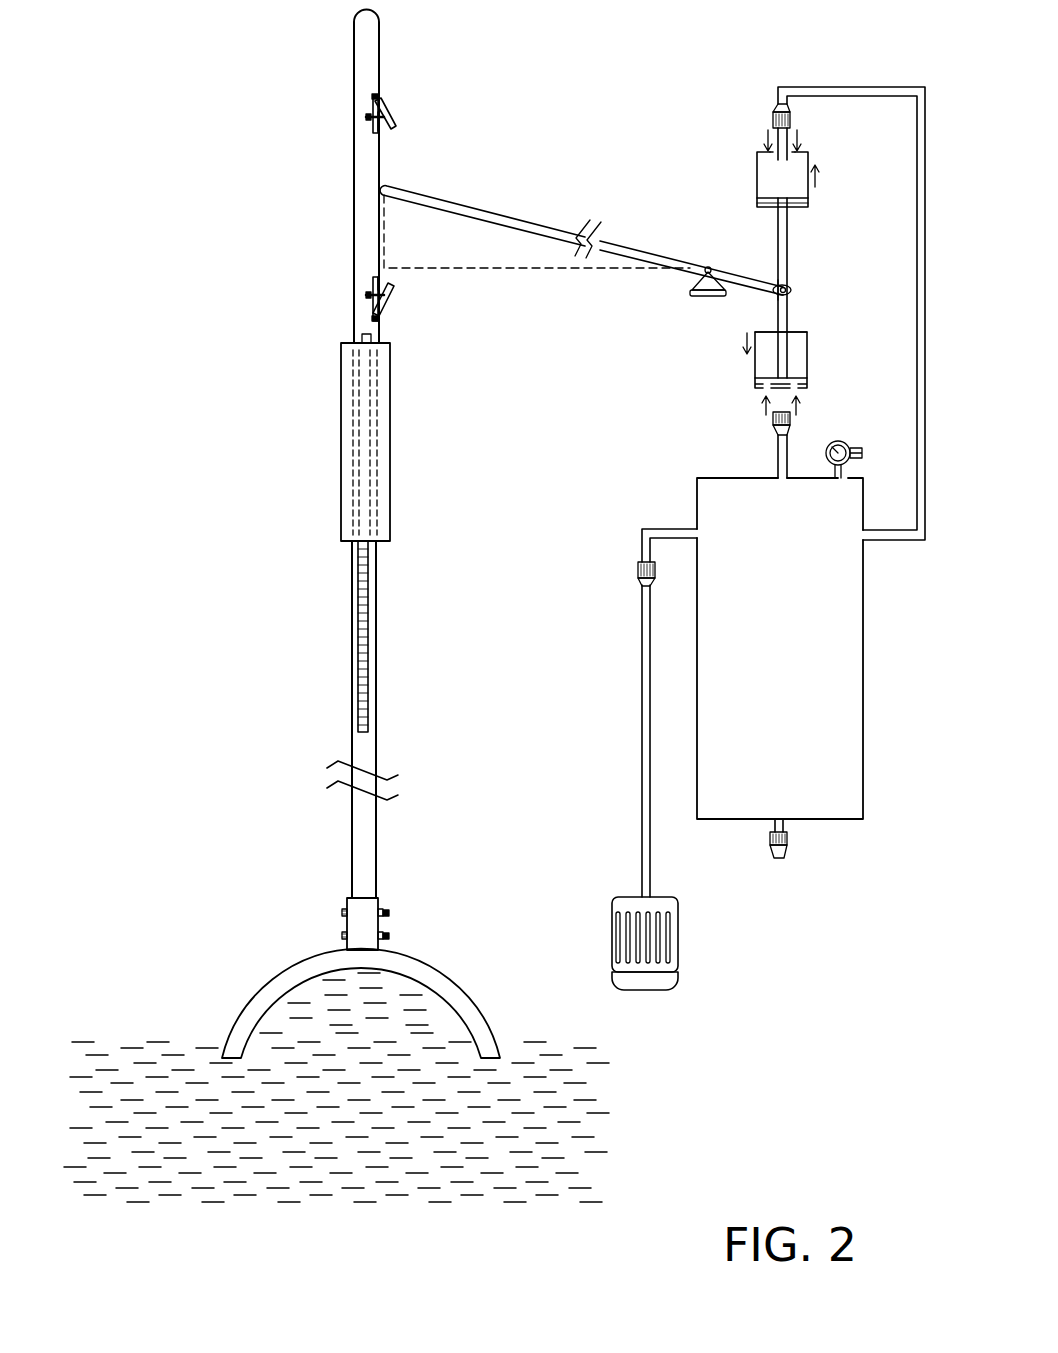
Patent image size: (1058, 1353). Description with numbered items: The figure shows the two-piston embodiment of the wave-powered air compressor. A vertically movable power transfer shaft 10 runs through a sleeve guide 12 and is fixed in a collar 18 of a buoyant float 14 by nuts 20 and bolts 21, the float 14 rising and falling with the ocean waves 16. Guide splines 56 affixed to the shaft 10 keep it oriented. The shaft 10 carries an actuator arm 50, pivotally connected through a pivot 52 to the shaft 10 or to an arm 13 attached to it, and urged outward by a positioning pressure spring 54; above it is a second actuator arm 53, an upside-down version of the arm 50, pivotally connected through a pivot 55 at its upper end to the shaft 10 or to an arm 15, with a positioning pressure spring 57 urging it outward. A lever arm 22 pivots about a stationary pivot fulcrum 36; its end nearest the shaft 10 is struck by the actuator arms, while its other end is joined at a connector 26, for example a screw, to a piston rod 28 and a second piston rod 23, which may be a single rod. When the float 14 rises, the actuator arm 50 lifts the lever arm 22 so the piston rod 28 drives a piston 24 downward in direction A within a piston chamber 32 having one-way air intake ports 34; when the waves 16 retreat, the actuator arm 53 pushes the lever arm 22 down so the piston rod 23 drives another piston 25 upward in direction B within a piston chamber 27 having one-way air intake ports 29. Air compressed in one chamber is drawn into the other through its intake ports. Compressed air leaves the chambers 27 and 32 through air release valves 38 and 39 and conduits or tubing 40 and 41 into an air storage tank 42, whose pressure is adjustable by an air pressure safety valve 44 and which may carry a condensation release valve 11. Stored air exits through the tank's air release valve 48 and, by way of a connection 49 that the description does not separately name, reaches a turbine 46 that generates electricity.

The power transfer shaft 10 is at (354, 196).
The condensation release valve 11 is at (788, 840).
The sleeve guide 12 is at (341, 431).
The arm 13 is at (374, 280).
The float 14 is at (483, 1012).
The arm 15 is at (377, 131).
The waves 16 is at (138, 1062).
The collar 18 is at (378, 900).
The nuts 20 is at (343, 912).
The bolts 21 is at (390, 913).
The lever arm 22 is at (498, 212).
The second piston rod 23 is at (788, 234).
The piston 24 is at (792, 372).
The piston 25 is at (757, 205).
The connector 26 is at (780, 284).
The piston chamber 27 is at (757, 175).
The piston rod 28 is at (790, 303).
The one-way air intake port 29 is at (758, 153).
The piston chamber 32 is at (807, 334).
The one-way air intake port 34 is at (760, 391).
The stationary pivot fulcrum 36 is at (698, 298).
The air release valve 38 is at (773, 418).
The air release valve 39 is at (773, 120).
The conduit 40 is at (778, 459).
The conduit 41 is at (778, 92).
The air storage tank 42 is at (863, 683).
The air pressure safety valve 44 is at (848, 446).
The turbine 46 is at (680, 935).
The air release valve 48 is at (638, 571).
The pipe 49 is at (642, 634).
The actuator arm 50 is at (392, 307).
The pivot 52 is at (373, 315).
The second actuator arm 53 is at (395, 126).
The positioning pressure spring 54 is at (367, 295).
The pivot 55 is at (379, 96).
The guide splines 56 is at (369, 590).
The positioning pressure spring 57 is at (366, 118).